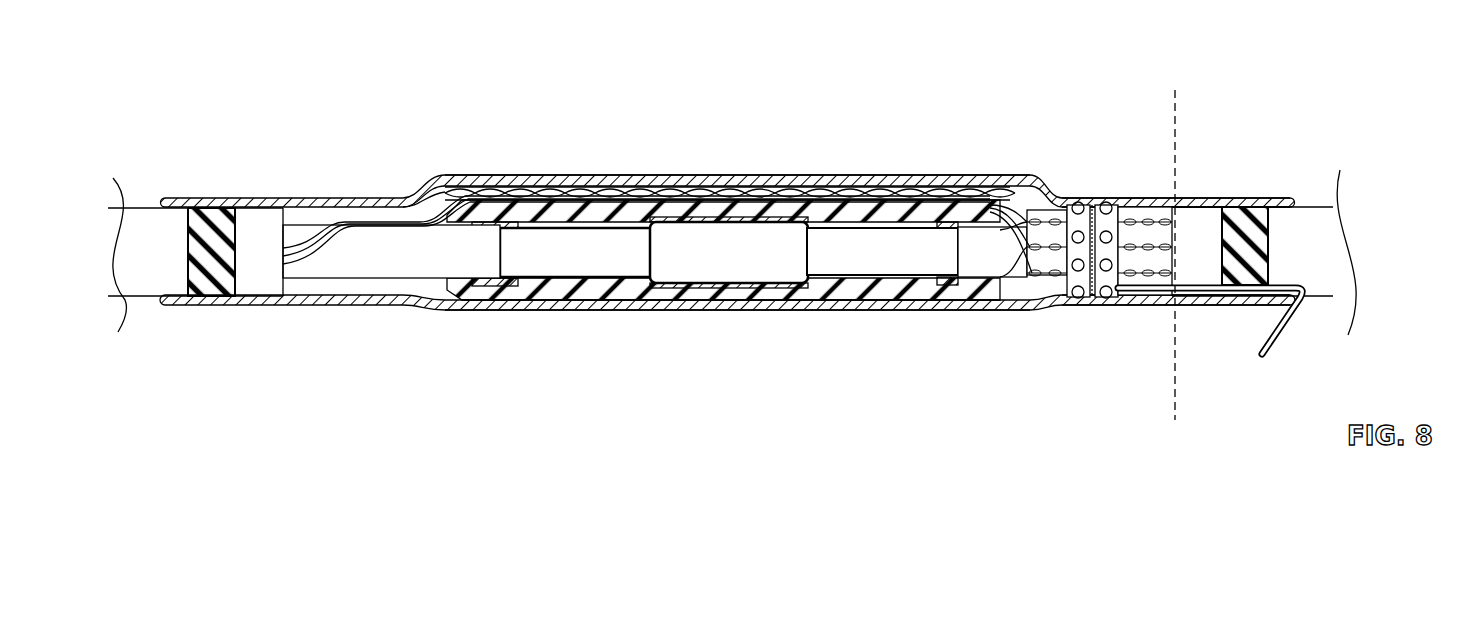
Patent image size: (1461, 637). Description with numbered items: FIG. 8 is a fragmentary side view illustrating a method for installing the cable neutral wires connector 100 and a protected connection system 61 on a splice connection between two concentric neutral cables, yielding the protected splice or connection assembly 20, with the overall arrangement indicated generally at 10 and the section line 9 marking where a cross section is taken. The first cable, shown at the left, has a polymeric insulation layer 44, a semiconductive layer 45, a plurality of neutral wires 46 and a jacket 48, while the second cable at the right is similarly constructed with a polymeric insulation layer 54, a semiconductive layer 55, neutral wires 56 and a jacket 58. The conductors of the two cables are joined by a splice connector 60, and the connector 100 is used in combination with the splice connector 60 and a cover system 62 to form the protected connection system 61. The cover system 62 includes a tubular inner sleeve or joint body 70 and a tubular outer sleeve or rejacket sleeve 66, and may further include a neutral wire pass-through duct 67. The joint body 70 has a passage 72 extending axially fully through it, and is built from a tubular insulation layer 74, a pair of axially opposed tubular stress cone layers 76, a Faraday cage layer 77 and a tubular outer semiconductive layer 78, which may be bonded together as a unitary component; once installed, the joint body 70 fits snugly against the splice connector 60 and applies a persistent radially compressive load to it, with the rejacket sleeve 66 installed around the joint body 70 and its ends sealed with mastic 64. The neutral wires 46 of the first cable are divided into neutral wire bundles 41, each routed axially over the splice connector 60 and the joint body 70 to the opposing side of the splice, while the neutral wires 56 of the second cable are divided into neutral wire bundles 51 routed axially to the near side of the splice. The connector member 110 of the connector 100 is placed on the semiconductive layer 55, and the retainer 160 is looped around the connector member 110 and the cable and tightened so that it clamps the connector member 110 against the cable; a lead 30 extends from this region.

The connector assembly 10 is at (150, 103).
The protected connection assembly 20 is at (465, 130).
The drain wire 30 is at (1275, 360).
The neutral wire bundle 41 is at (1040, 220).
The polymeric insulation layer 44 is at (598, 247).
The semiconductive layer 45 is at (392, 240).
The neutral wires 46 is at (337, 225).
The jacket 48 is at (140, 205).
The neutral wire bundle 51 is at (1155, 250).
The polymeric insulation layer 54 is at (893, 240).
The semiconductive layer 55 is at (1000, 240).
The neutral wires 56 is at (1170, 210).
The jacket 58 is at (1215, 207).
The splice connector 60 is at (725, 265).
The protected connection system 61 is at (757, 47).
The cover system 62 is at (798, 100).
The mastic 64 is at (213, 222).
The rejacket sleeve 66 is at (755, 196).
The neutral wire pass-through duct 67 is at (688, 192).
The joint body 70 is at (527, 318).
The passage 72 is at (535, 258).
The insulation layer 74 is at (865, 300).
The stress cone layers 76 is at (470, 300).
The Faraday cage layer 77 is at (775, 300).
The outer semiconductive layer 78 is at (565, 300).
The cable neutral wires connector 100 is at (1093, 312).
The connector member 110 is at (1078, 210).
The retainer 160 is at (1112, 208).
The section line 9- 9 is at (1175, 85).